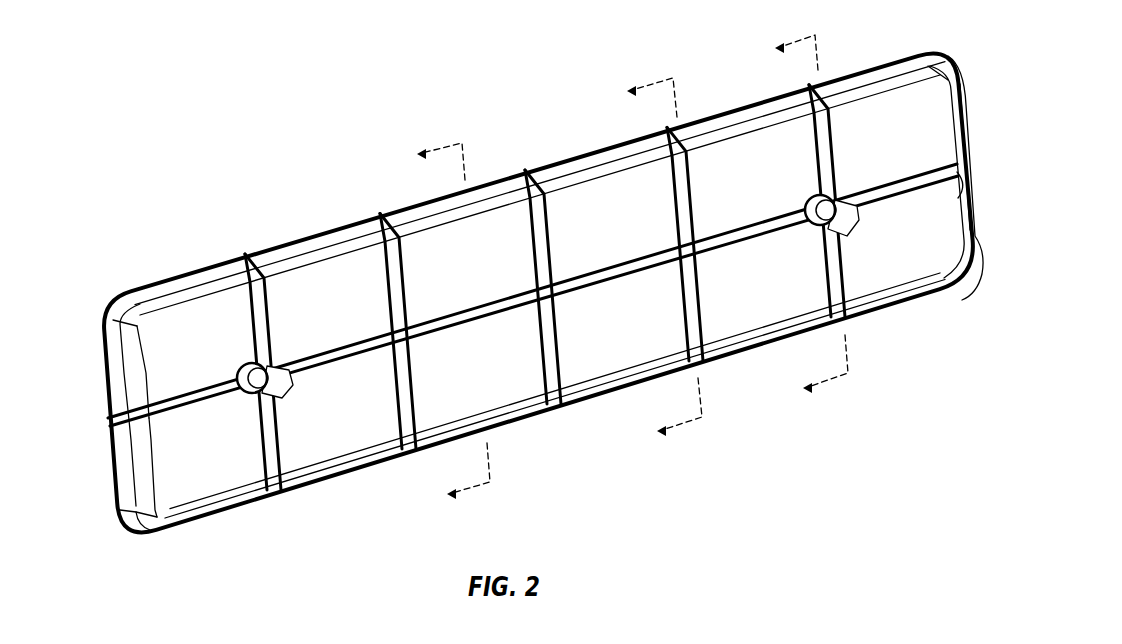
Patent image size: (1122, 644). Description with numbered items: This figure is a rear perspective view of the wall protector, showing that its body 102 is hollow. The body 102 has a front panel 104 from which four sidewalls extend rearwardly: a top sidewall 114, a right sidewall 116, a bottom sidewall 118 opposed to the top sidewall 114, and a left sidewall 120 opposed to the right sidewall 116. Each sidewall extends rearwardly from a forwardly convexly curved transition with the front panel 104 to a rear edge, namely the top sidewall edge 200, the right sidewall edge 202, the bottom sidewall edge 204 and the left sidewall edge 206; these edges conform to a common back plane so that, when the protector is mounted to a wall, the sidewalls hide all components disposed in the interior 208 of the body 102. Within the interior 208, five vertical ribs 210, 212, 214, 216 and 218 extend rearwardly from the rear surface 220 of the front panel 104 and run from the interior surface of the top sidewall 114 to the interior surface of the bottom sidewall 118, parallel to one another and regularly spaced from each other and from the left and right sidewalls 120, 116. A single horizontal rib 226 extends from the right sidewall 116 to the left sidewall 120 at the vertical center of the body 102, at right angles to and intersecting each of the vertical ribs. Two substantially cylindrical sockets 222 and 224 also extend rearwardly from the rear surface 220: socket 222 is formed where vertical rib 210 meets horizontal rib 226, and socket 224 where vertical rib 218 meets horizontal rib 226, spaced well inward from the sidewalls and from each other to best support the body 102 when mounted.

The body 102 is at (178, 193).
The front panel 104 is at (349, 322).
The top sidewall 114 is at (298, 250).
The right sidewall 116 is at (112, 388).
The bottom sidewall 118 is at (605, 402).
The left sidewall 120 is at (957, 199).
The top sidewall edge 200 is at (567, 156).
The right sidewall edge 202 is at (126, 453).
The bottom sidewall edge 204 is at (291, 494).
The left sidewall edge 206 is at (976, 264).
The interior 208 is at (634, 231).
The vertical rib 210 is at (247, 313).
The vertical rib 212 is at (415, 400).
The vertical rib 214 is at (533, 254).
The vertical rib 216 is at (701, 205).
The vertical rib 218 is at (832, 150).
The rear surface 220 is at (774, 297).
The socket 222 is at (283, 401).
The socket 224 is at (841, 224).
The horizontal rib 226 is at (602, 288).